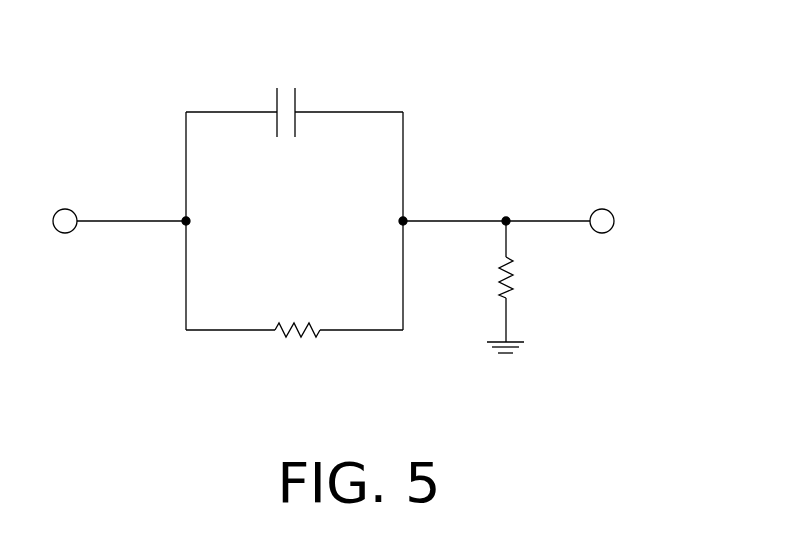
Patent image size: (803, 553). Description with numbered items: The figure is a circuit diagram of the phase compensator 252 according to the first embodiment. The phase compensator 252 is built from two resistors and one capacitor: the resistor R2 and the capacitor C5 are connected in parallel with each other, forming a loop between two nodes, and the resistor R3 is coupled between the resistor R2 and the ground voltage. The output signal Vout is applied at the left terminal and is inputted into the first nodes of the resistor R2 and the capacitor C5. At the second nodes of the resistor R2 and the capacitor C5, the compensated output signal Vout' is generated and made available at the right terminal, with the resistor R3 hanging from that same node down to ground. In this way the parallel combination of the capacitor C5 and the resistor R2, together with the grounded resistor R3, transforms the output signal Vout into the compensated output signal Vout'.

The phase compensator 252 is at (366, 177).
The capacitor C5 is at (289, 96).
The resistor R2 is at (297, 314).
The resistor R3 is at (528, 277).
The output signal Vout is at (67, 181).
The compensated output signal Vout' is at (637, 181).